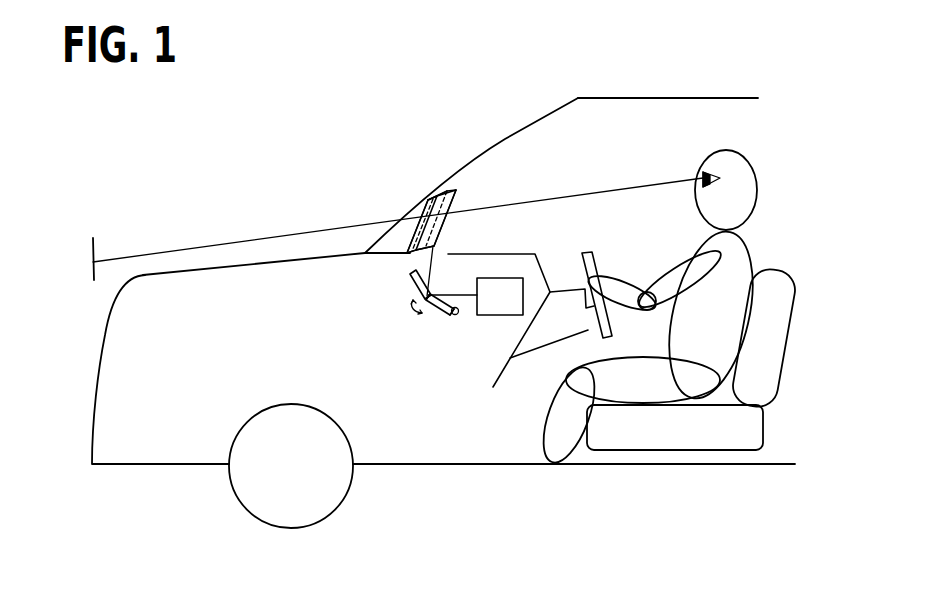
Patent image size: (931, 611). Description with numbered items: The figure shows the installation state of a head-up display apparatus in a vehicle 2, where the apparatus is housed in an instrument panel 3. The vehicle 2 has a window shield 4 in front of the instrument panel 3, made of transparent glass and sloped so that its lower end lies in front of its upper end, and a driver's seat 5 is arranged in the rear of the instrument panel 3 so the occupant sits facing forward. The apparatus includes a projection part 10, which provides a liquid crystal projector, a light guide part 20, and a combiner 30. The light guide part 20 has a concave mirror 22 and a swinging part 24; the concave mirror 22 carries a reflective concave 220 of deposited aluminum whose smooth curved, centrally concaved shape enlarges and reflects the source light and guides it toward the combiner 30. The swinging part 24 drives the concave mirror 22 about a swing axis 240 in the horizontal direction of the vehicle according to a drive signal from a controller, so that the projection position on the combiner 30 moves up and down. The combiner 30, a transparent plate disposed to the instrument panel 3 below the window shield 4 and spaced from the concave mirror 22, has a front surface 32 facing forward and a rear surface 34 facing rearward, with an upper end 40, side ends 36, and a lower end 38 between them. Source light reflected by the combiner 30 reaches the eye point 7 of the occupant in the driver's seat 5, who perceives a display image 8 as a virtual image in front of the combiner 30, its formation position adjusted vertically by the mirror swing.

The vehicle 2 is at (730, 99).
The instrument panel 3 is at (533, 254).
The window shield 4 is at (507, 140).
The driver's seat 5 is at (792, 317).
The eye point 7 is at (700, 172).
The display image 8 is at (97, 249).
The projection part 10 is at (486, 316).
The light guide part 20 is at (422, 293).
The concave mirror 22 is at (433, 316).
The swinging part 24 is at (430, 319).
The combiner 30 is at (459, 186).
The front surface 32 is at (422, 201).
The rear surface 34 is at (440, 228).
The side ends 36 is at (456, 193).
The lower end 38 is at (413, 258).
The upper end 40 is at (446, 189).
The reflective concave 220 is at (458, 308).
The swing axis 240 is at (452, 312).